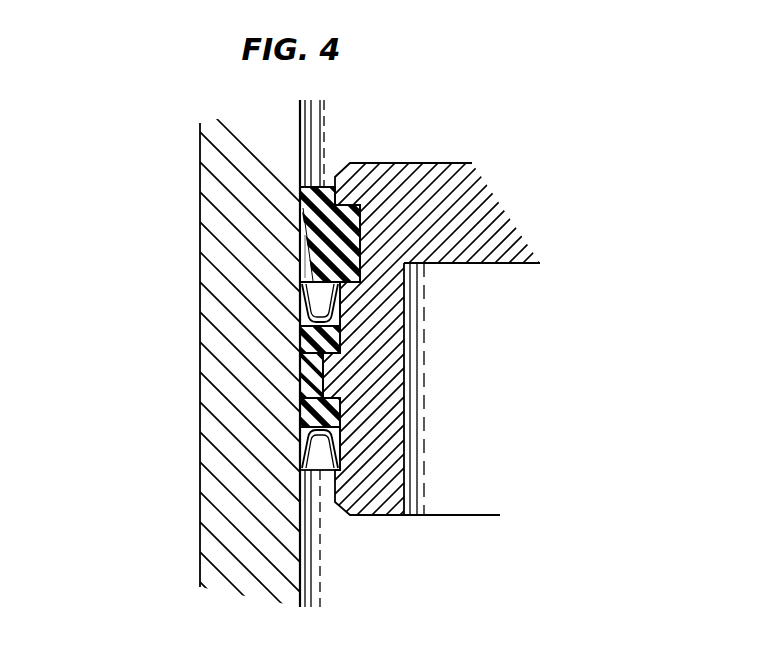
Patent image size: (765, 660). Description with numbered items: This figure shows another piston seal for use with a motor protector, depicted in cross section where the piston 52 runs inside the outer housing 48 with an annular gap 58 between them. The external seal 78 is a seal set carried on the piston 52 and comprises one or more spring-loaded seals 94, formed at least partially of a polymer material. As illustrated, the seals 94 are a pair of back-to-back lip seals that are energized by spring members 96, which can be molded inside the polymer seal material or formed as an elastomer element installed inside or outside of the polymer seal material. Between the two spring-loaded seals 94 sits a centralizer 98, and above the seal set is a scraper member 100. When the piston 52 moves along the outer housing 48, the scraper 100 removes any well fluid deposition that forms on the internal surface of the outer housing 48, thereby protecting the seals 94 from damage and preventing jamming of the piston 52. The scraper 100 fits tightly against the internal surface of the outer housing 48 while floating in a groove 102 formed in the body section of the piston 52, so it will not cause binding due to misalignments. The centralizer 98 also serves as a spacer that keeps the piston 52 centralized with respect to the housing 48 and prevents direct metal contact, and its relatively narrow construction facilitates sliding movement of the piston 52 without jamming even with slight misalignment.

The outer housing 48 is at (200, 200).
The piston 52 is at (390, 432).
The annular gap / flow path 58 is at (328, 150).
The external seal 78 is at (318, 490).
The spring-loaded seals 94 is at (303, 338).
The spring members 96 is at (302, 316).
The centralizer 98 is at (306, 380).
The scraper member 100 is at (328, 247).
The groove 102 is at (360, 257).